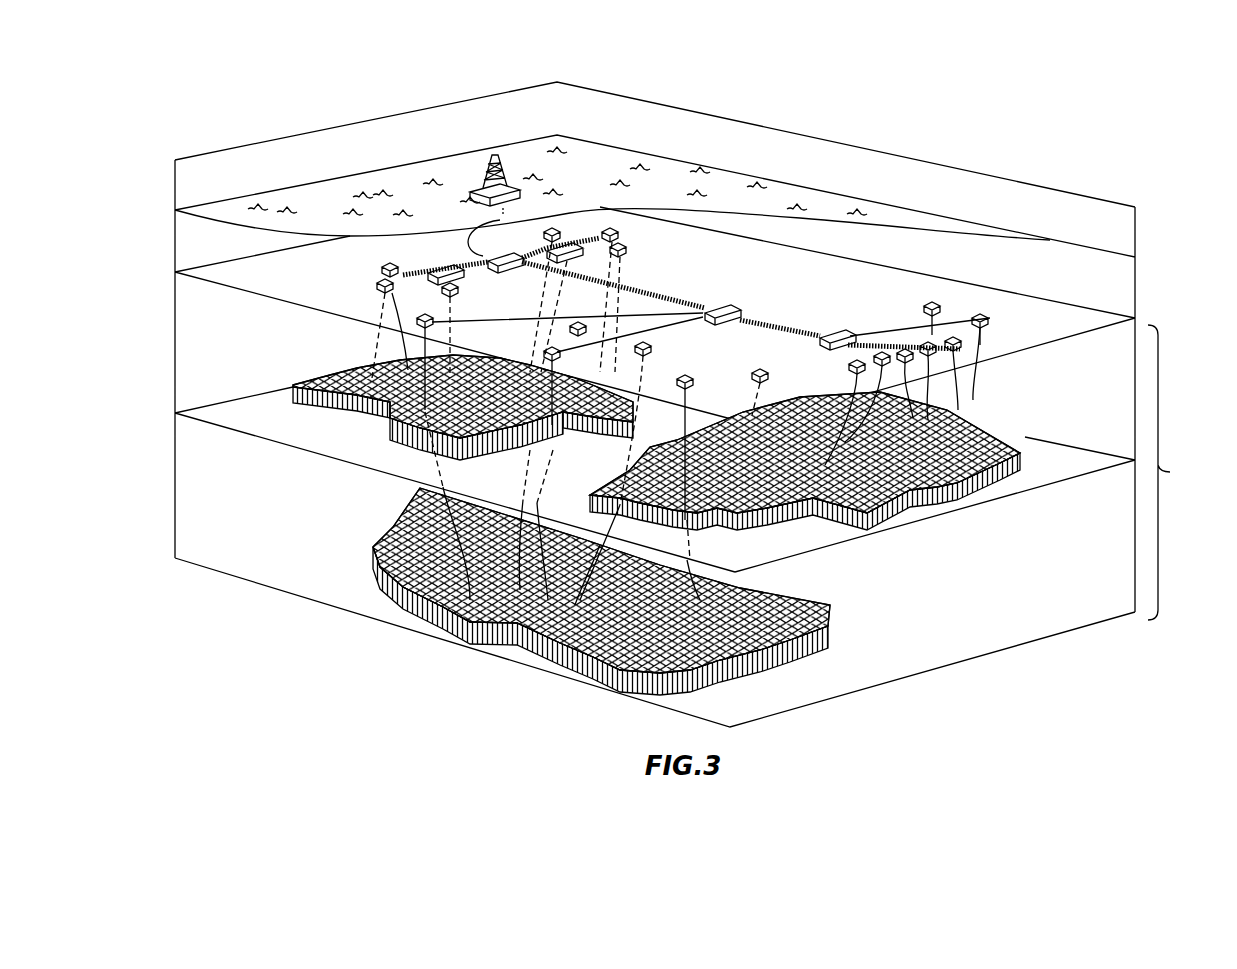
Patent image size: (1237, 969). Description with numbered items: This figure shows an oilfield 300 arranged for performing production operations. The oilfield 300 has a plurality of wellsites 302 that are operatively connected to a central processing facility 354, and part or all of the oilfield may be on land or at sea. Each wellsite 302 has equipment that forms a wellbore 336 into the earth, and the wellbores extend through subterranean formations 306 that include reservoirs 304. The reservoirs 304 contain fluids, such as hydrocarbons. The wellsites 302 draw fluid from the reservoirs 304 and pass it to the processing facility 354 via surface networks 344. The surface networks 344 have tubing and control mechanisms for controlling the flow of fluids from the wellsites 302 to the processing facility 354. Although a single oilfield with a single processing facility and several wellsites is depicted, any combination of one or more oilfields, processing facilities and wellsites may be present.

The oilfield 300 is at (218, 93).
The wellsites 302 is at (777, 354).
The reservoirs 304 is at (808, 657).
The subterranean formations 306 is at (1189, 472).
The wellbore 336 is at (963, 413).
The surface networks 344 is at (411, 286).
The central processing facility 354 is at (482, 171).